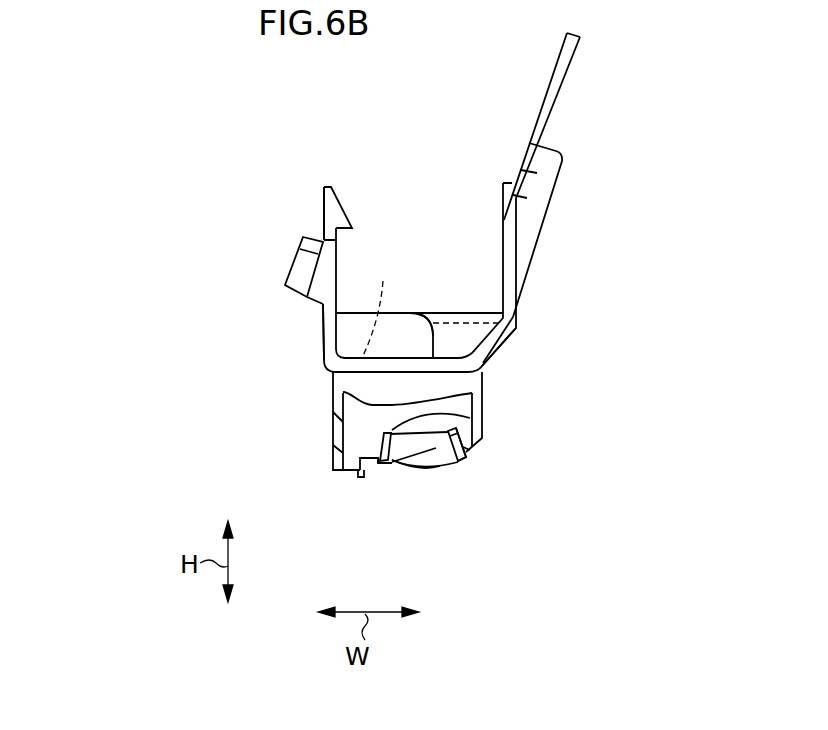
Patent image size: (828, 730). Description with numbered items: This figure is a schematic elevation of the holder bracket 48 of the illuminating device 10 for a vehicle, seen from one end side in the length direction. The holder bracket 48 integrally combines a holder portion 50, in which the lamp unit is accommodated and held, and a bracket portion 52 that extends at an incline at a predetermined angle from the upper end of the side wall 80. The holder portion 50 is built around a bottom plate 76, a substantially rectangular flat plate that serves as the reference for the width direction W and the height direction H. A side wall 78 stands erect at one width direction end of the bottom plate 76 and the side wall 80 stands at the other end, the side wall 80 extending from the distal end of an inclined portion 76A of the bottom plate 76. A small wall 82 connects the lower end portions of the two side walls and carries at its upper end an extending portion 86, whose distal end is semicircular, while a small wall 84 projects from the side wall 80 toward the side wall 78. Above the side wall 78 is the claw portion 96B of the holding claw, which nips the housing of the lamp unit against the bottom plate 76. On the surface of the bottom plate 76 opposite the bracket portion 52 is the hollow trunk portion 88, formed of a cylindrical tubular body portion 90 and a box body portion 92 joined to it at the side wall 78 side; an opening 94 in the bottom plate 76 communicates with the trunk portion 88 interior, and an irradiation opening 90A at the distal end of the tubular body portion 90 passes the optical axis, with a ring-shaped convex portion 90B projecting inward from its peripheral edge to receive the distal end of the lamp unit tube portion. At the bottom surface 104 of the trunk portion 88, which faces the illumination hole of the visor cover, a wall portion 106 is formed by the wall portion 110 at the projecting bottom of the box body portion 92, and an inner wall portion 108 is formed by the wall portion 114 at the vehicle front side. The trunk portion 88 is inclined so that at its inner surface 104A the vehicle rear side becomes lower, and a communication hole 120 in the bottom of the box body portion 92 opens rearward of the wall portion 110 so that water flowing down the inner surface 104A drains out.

The holder bracket 48 is at (352, 300).
The illuminating device for a vehicle 10 is at (392, 300).
The holder portion 50 is at (527, 351).
The bracket portion 52 is at (564, 85).
The claw portion 96B is at (342, 204).
The side wall 80 is at (508, 268).
The small wall 82 is at (473, 334).
The extending portion 86 is at (453, 312).
The opening 94 is at (383, 306).
The side wall 78 is at (326, 331).
The small wall 84 is at (347, 341).
The bottom plate 76 is at (450, 360).
The inclined portion 76A is at (507, 340).
The trunk portion 88 is at (391, 470).
The tubular body portion 90 is at (398, 388).
The box body portion 92 is at (333, 445).
The inner surface 104A is at (373, 463).
The convex portion 90B is at (483, 438).
The bottom surface 104 is at (466, 452).
The communication hole 120 is at (360, 477).
The wall portion 110 is at (385, 513).
The wall portion 106 is at (380, 464).
The irradiation opening 90A is at (440, 458).
The wall portion 114 is at (545, 482).
The inner wall portion 108 is at (470, 458).